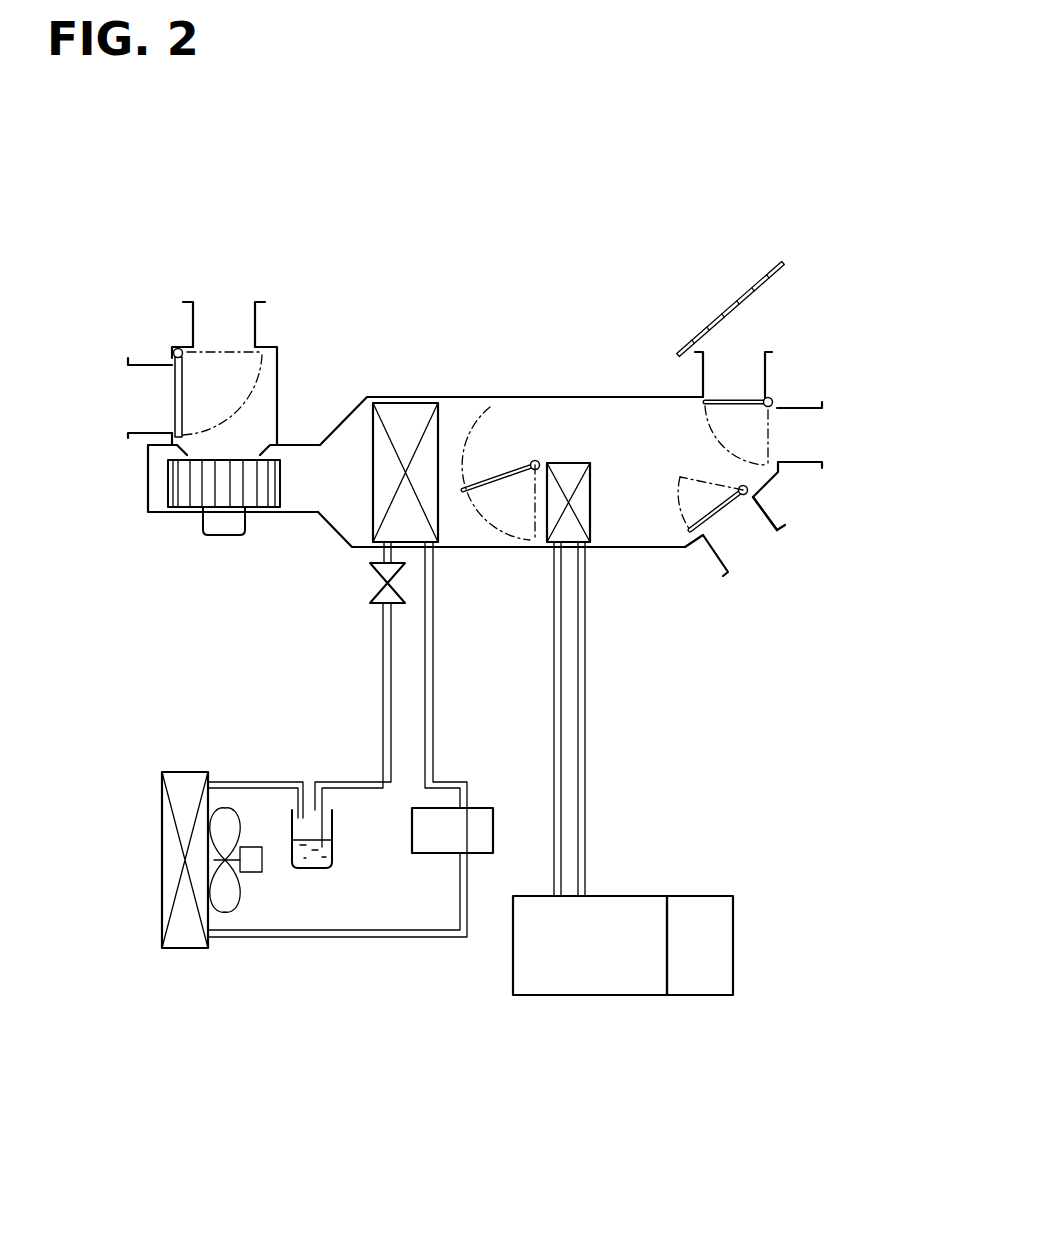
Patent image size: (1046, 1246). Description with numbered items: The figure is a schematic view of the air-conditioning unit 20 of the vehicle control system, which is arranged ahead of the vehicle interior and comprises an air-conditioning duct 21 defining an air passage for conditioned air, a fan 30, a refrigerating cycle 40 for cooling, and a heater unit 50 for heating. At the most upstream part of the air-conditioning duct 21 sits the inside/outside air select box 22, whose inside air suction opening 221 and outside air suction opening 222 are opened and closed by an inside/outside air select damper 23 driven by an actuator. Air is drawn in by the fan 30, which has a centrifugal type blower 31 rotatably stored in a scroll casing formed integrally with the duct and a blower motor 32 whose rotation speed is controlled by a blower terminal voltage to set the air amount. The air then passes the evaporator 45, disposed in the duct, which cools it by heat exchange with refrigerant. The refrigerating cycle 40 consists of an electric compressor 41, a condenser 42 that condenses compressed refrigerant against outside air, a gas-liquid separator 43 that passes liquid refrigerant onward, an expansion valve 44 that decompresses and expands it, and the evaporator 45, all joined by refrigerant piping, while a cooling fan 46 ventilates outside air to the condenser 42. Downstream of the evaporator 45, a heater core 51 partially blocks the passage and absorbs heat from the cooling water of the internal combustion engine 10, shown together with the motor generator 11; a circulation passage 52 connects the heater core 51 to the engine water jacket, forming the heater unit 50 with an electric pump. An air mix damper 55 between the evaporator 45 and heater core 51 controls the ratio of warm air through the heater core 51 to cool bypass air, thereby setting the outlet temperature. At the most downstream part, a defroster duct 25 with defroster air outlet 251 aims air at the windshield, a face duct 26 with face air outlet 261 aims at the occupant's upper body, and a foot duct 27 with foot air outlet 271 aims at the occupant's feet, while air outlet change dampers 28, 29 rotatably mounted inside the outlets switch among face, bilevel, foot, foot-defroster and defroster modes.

The internal combustion engine 10 is at (532, 996).
The motor generator 11 is at (697, 996).
The air-conditioning unit 20 is at (569, 296).
The air-conditioning duct 21 is at (517, 396).
The inside/outside air select box 22 is at (277, 374).
The inside air suction opening 221 is at (133, 380).
The outside air suction opening 222 is at (217, 312).
The inside/outside air select damper 23 is at (172, 403).
The defroster duct 25 is at (703, 378).
The defroster air outlet 251 is at (723, 360).
The face duct 26 is at (812, 463).
The face air outlet 261 is at (807, 433).
The foot duct 27 is at (773, 520).
The foot air outlet 271 is at (730, 543).
The air outlet change damper 28 is at (745, 397).
The air outlet change damper 29 is at (718, 520).
The fan 30 is at (187, 545).
The centrifugal type blower 31 is at (282, 492).
The blower motor 32 is at (223, 537).
The refrigerating cycle 40 is at (257, 772).
The electric compressor 41 is at (420, 855).
The condenser 42 is at (180, 950).
The gas-liquid separator 43 is at (317, 867).
The expansion valve 44 is at (380, 606).
The evaporator 45 is at (405, 400).
The cooling fan 46 is at (232, 893).
The heater unit 50 is at (599, 765).
The heater core 51 is at (590, 508).
The circulation passage 52 is at (586, 663).
The air mix damper 55 is at (502, 485).